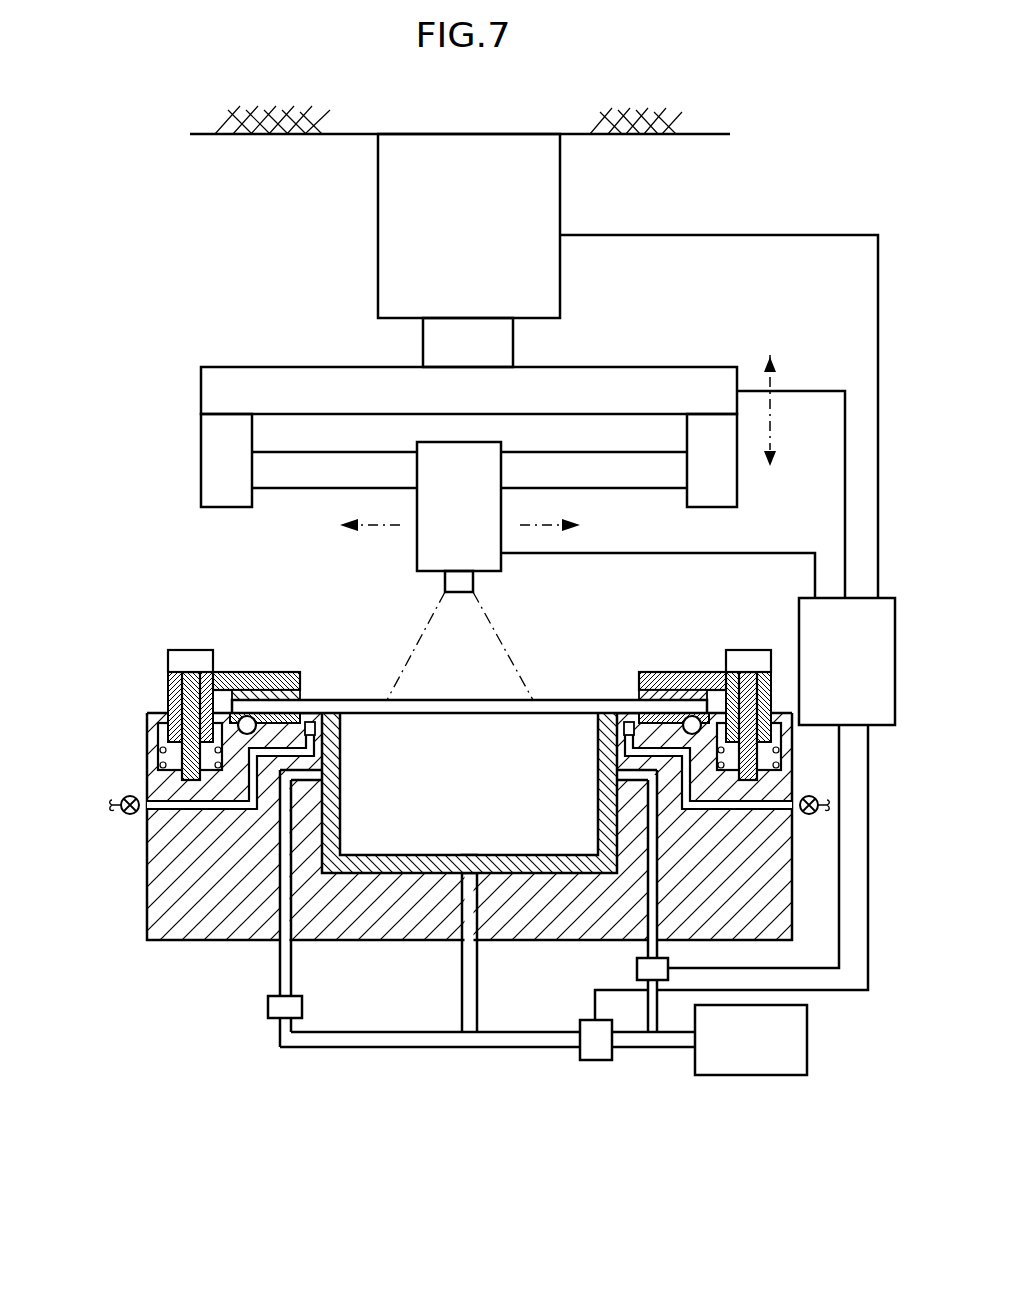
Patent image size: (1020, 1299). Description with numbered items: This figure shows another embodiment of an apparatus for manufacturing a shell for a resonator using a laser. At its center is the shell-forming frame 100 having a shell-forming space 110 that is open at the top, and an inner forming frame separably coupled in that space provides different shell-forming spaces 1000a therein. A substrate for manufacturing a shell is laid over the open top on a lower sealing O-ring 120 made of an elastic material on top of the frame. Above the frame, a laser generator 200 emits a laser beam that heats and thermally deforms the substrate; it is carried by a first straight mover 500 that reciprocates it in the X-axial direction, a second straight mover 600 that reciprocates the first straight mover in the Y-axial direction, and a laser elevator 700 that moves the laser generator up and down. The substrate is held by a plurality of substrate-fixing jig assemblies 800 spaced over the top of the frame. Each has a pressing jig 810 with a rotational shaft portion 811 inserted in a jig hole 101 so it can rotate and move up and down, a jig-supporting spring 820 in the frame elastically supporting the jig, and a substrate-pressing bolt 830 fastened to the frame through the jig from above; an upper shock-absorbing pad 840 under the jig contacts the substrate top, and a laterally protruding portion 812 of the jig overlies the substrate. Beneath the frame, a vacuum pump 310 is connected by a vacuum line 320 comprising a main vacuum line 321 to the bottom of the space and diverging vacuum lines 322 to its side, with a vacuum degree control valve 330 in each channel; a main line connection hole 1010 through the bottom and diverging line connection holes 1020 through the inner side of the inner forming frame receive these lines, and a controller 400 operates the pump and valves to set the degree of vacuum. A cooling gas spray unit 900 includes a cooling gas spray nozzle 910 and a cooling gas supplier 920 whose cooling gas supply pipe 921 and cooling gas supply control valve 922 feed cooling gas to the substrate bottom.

The shell-forming frame 100 is at (228, 940).
The jig hole 101 is at (165, 755).
The shell-forming space 110 is at (367, 865).
The lower sealing O-ring 120 is at (185, 800).
The laser generator 200 is at (500, 563).
The vacuum pump 310 is at (770, 1075).
The vacuum line 320 is at (487, 978).
The main vacuum line 321 is at (628, 1040).
The diverging vacuum lines 322 is at (280, 965).
The vacuum degree control valve 330 is at (597, 1053).
The controller 400 is at (799, 615).
The first straight mover 500 is at (293, 478).
The second straight mover 600 is at (215, 445).
The laser elevator 700 is at (380, 186).
The substrate-fixing jig assembly 800 is at (469, 681).
The pressing jig 810 is at (245, 636).
The rotational shaft portion 811 is at (288, 594).
The clamp arm 812 is at (275, 670).
The jig-supporting spring 820 is at (141, 721).
The substrate-pressing bolt 830 is at (165, 653).
The upper shock-absorbing pad 840 is at (300, 697).
The cooling gas spray unit 900 is at (190, 905).
The cooling gas spray nozzle 910 is at (270, 757).
The cooling gas supplier 920 is at (159, 919).
The cooling gas supply pipe 921 is at (190, 810).
The cooling gas supply control valve 922 is at (130, 815).
The shell-forming spaces 1000a is at (460, 740).
The main line connection hole 1010 is at (470, 862).
The diverging line connection holes 1020 is at (605, 777).